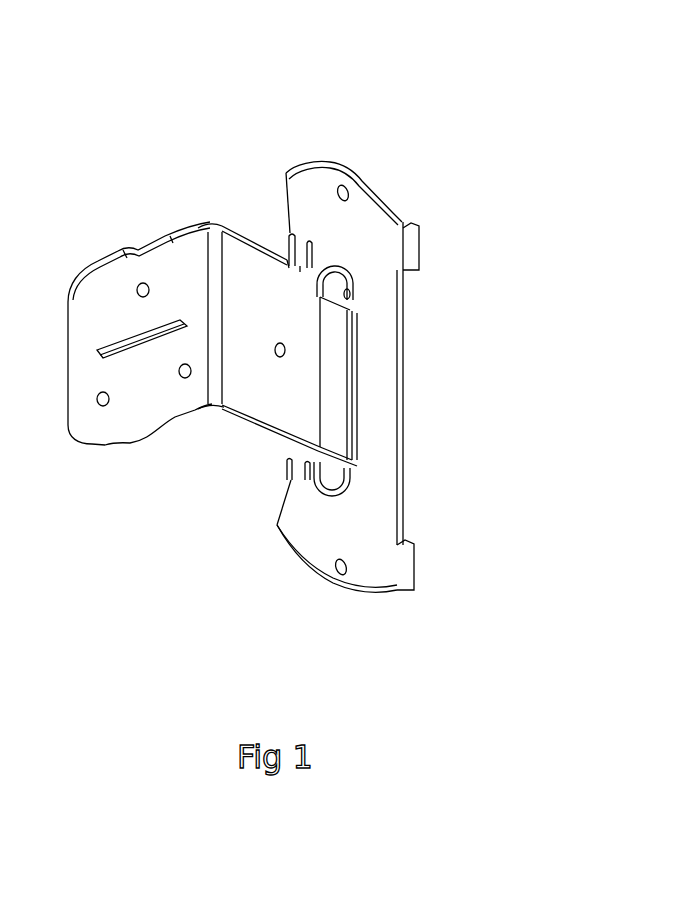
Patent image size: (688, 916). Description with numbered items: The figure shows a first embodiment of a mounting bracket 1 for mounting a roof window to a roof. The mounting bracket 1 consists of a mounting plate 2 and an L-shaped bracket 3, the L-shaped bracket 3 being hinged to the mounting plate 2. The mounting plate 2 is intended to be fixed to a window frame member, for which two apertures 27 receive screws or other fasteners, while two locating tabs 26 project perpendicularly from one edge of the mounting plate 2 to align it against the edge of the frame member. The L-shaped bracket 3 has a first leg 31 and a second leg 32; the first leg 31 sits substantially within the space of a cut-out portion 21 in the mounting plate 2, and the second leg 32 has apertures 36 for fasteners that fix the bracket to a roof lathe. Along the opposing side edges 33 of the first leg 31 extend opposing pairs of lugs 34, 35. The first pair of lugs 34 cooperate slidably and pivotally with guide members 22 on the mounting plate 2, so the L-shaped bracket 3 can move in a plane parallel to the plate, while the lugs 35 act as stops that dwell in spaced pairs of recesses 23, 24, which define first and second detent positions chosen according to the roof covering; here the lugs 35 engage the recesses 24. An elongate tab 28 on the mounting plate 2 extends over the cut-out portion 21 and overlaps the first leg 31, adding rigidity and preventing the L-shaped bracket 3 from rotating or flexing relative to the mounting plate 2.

The mounting bracket 1 is at (293, 359).
The mounting plate 2 is at (365, 215).
The L-shaped bracket 3 is at (208, 233).
The cut-out portion 21 is at (347, 293).
The guide members 22 is at (330, 268).
The recesses 23 is at (310, 238).
The recesses 24 is at (290, 232).
The locating tabs 26 is at (412, 248).
The apertures 27 is at (346, 190).
The elongate tab 28 is at (335, 380).
The first leg 31 is at (250, 400).
The second leg 32 is at (130, 412).
The opposing side edges 33 is at (237, 235).
The first pair of lugs 34 is at (320, 462).
The lugs 35 is at (290, 265).
The apertures 36 is at (143, 290).